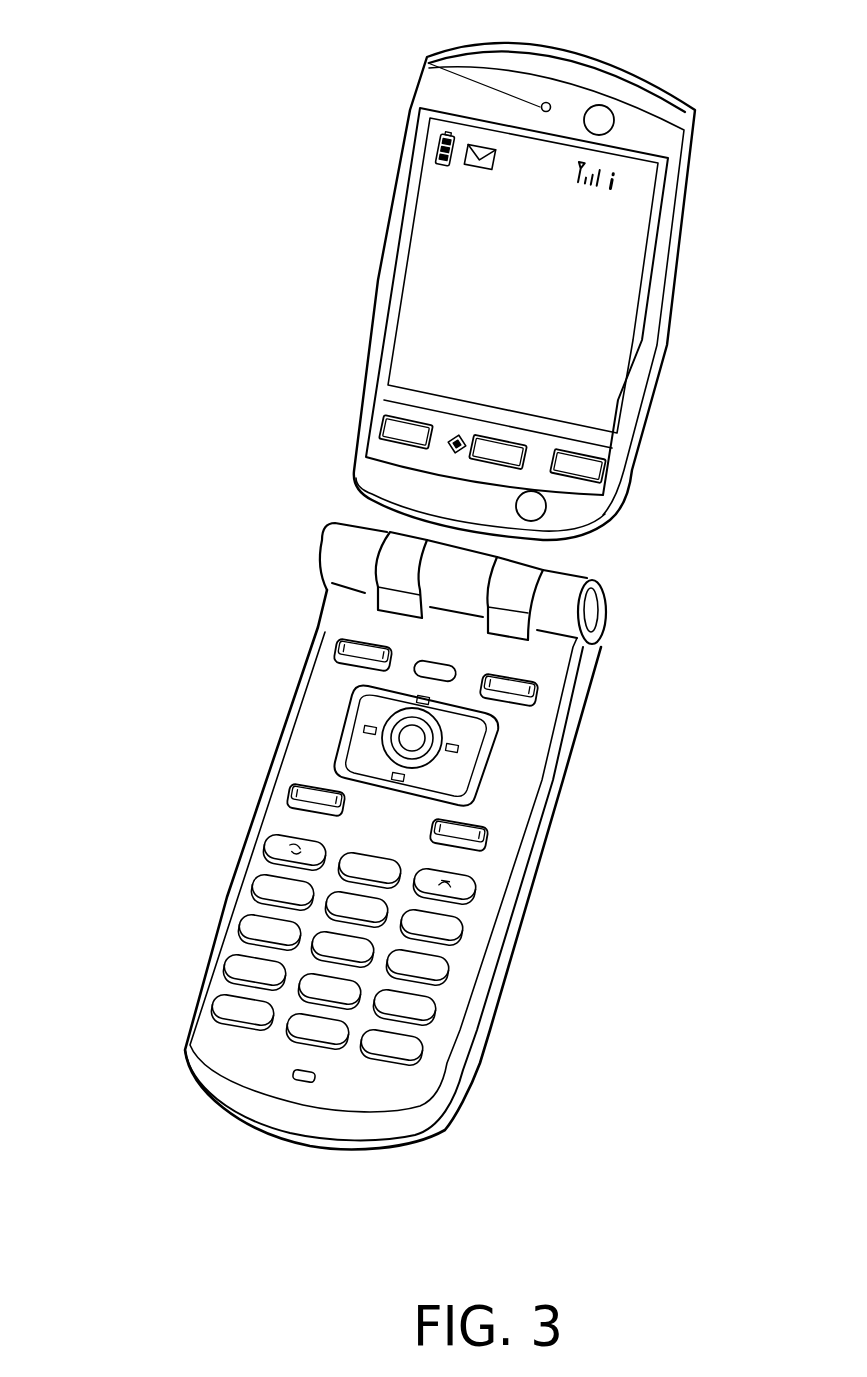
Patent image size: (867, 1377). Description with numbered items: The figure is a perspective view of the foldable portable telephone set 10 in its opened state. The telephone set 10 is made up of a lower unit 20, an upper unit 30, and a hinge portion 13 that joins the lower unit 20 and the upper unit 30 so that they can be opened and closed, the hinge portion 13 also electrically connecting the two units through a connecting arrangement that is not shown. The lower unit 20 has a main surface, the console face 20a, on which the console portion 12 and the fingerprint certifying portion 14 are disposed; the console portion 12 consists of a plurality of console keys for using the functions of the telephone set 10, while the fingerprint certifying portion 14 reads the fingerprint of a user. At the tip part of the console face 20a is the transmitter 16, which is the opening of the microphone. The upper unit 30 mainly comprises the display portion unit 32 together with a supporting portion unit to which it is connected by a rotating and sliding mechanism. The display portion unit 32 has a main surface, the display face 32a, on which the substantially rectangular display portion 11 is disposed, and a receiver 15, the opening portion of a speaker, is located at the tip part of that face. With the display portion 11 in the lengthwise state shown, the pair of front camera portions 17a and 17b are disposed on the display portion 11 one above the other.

The foldable portable telephone set 10 is at (158, 925).
The display portion 11 is at (423, 265).
The console portion 12 is at (639, 1145).
The hinge portion 13 is at (345, 540).
The fingerprint certifying portion 14 is at (433, 668).
The receiver 15 is at (427, 57).
The transmitter 16 is at (291, 1080).
The front camera portion 17a is at (600, 121).
The front camera portion 17b is at (537, 508).
The lower unit 20 is at (207, 1036).
The console face 20a is at (305, 727).
The upper unit 30 is at (664, 82).
The display portion unit 32 is at (664, 325).
The display face 32a is at (434, 97).